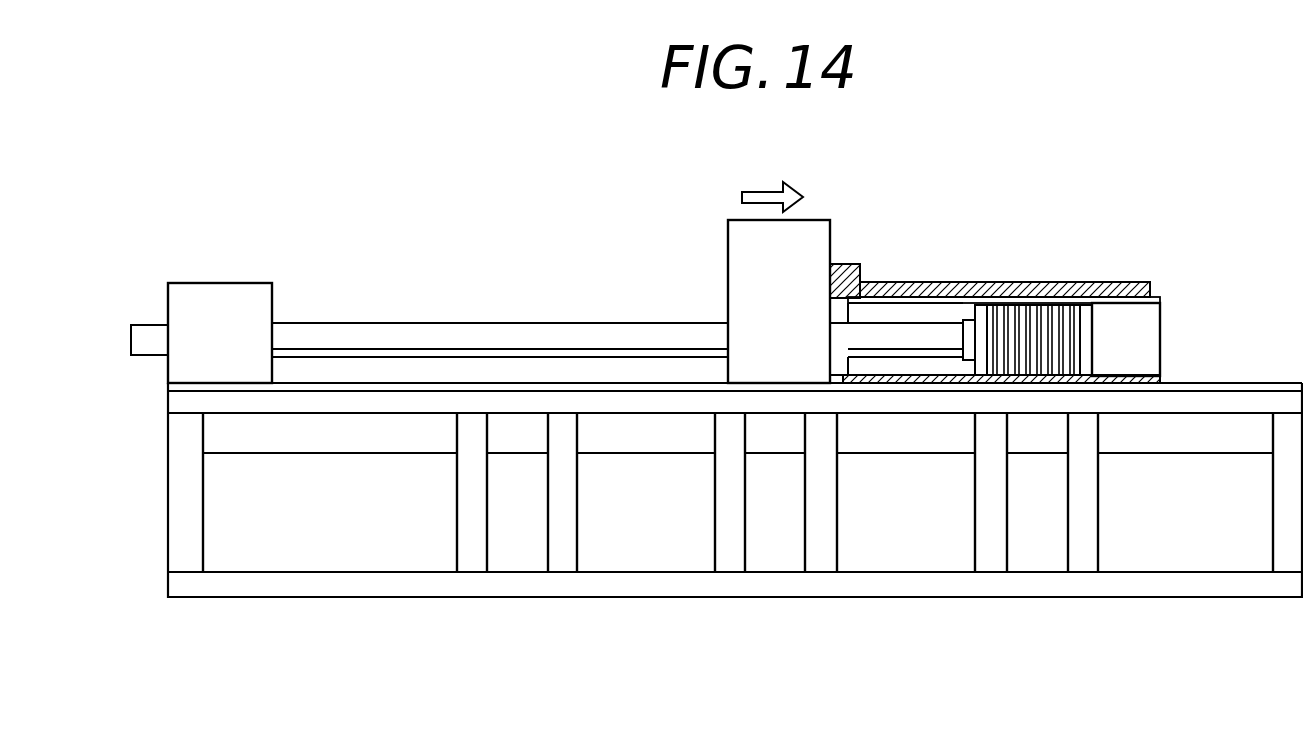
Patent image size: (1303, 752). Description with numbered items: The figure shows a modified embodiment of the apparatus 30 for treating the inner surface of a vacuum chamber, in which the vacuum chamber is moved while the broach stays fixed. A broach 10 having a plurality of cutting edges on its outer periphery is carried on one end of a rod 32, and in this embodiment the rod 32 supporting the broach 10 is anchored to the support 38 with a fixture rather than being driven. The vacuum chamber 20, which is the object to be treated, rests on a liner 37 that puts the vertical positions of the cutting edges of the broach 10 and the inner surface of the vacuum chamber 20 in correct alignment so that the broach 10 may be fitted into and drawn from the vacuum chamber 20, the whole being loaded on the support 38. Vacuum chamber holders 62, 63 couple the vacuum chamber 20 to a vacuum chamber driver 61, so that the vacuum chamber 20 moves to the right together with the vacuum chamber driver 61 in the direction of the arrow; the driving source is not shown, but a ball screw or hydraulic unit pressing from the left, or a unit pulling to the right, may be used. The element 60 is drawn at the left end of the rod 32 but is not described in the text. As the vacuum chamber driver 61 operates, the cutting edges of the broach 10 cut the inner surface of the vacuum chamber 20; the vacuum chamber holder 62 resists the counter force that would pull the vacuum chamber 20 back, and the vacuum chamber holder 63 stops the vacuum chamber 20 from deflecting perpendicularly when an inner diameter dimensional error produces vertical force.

The broach 10 is at (1085, 346).
The vacuum chamber 20 is at (1162, 330).
The apparatus for treating the inner surface of a vacuum chamber 30 is at (701, 514).
The rod 32 is at (505, 323).
The liner 37 is at (1249, 381).
The support 38 is at (168, 406).
The drive block 60 is at (272, 292).
The vacuum chamber driver 61 is at (728, 252).
The vacuum chamber holder 62 is at (848, 268).
The vacuum chamber holder 63 is at (958, 282).